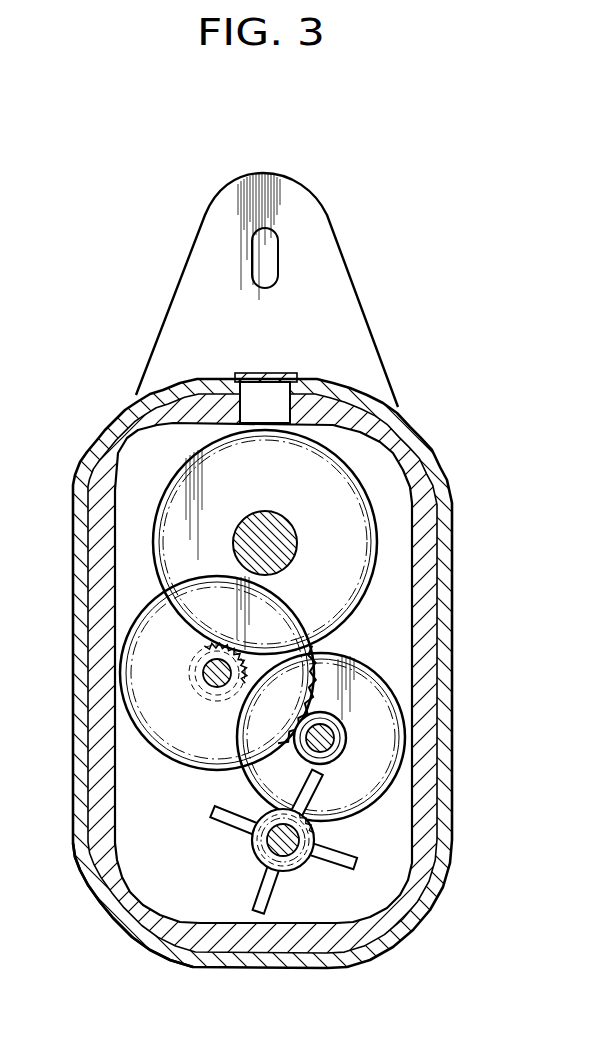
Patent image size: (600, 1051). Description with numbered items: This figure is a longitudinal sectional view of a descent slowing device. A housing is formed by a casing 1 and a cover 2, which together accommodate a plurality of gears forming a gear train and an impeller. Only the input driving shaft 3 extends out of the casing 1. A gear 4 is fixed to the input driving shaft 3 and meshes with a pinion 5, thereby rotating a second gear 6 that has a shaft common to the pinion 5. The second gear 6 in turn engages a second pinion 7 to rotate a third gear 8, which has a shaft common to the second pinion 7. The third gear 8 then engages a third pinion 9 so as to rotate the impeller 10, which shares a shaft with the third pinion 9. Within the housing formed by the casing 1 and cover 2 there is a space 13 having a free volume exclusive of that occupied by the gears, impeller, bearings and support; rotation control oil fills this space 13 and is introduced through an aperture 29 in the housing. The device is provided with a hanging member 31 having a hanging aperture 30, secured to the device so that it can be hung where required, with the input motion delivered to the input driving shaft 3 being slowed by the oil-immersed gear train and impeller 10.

The casing 1 is at (416, 431).
The cover 2 is at (420, 467).
The input driving shaft 3 is at (278, 535).
The gear 4 is at (357, 523).
The pinion 5 is at (203, 677).
The second gear 6 is at (167, 740).
The second pinion 7 is at (338, 735).
The third gear 8 is at (353, 797).
The third pinion 9 is at (292, 863).
The impeller 10 is at (255, 858).
The space 13 is at (148, 892).
The aperture 29 is at (272, 398).
The hanging aperture 30 is at (268, 238).
The hanging member 31 is at (340, 288).